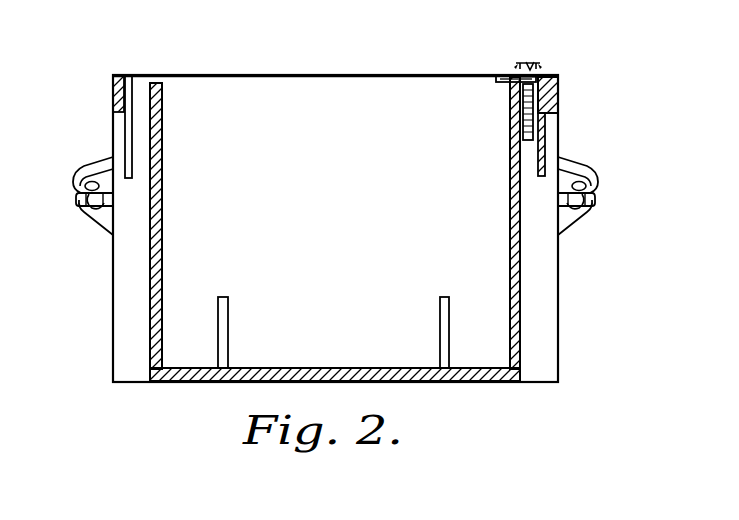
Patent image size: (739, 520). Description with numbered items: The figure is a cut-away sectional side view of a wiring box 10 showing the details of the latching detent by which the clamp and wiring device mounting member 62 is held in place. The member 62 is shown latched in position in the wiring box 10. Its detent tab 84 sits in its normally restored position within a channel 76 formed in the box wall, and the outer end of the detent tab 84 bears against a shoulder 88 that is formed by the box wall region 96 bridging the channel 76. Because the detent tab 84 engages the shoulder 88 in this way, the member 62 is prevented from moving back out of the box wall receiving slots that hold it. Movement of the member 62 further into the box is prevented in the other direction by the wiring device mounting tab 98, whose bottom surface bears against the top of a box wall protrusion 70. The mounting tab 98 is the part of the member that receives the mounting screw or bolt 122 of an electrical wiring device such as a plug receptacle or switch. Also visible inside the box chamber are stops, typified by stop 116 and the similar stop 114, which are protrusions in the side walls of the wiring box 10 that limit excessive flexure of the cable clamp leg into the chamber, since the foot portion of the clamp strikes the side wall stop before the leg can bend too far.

The wiring box 10 is at (106, 307).
The member 62 is at (545, 146).
The box wall protrusion 70 is at (511, 173).
The channel 76 is at (536, 280).
The detent tab 84 is at (536, 124).
The shoulder 88 is at (546, 114).
The box wall region 96 is at (560, 81).
The wiring device mounting tab 98 is at (511, 76).
The rib 114 is at (229, 305).
The stop 116 is at (440, 299).
The mounting screw or bolt 122 is at (542, 58).